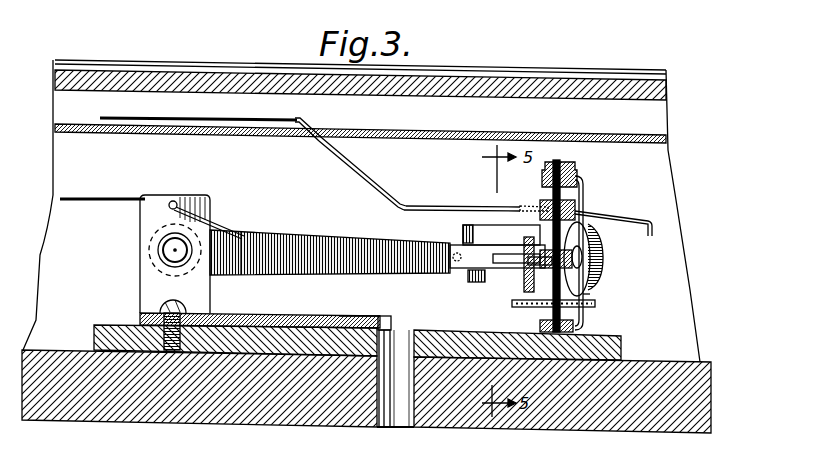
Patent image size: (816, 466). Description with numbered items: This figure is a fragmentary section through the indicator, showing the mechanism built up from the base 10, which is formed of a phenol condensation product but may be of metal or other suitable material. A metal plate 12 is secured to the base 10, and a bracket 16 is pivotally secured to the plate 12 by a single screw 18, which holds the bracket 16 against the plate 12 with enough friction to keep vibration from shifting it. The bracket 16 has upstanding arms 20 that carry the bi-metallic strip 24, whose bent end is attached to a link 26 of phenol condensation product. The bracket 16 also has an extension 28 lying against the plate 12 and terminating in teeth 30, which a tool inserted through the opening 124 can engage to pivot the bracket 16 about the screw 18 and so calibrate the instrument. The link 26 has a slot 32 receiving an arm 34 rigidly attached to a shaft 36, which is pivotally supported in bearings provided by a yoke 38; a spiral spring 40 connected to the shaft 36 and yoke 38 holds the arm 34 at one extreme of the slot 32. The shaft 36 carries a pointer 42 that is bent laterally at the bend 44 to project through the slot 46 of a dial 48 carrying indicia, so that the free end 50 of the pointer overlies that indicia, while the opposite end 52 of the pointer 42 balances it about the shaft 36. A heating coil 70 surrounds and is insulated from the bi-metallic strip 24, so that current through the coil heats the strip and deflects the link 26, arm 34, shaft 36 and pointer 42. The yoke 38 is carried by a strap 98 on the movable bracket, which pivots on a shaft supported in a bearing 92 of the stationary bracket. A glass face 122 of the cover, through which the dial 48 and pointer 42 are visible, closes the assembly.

The base 10 is at (599, 428).
The metal plate 12 is at (623, 356).
The bracket 16 is at (204, 310).
The screw 18 is at (160, 304).
The upstanding arms 20 is at (148, 284).
The bi-metallic strip 24 is at (462, 270).
The link 26 is at (540, 224).
The extension 28 is at (366, 319).
The teeth 30 is at (388, 322).
The slot 32 is at (524, 248).
The arm 34 is at (497, 265).
The shaft 36 is at (596, 287).
The yoke 38 is at (590, 294).
The spiral spring 40 is at (514, 306).
The pointer 42 is at (428, 205).
The lateral bend 44 is at (364, 182).
The slot 46 is at (316, 130).
The dial 48 is at (427, 134).
The free end 50 is at (162, 119).
The opposite end 52 is at (641, 218).
The heating coil 70 is at (304, 277).
The bearing 92 is at (572, 168).
The strap 98 is at (463, 235).
The glass face 122 is at (597, 78).
The opening 124 is at (391, 428).